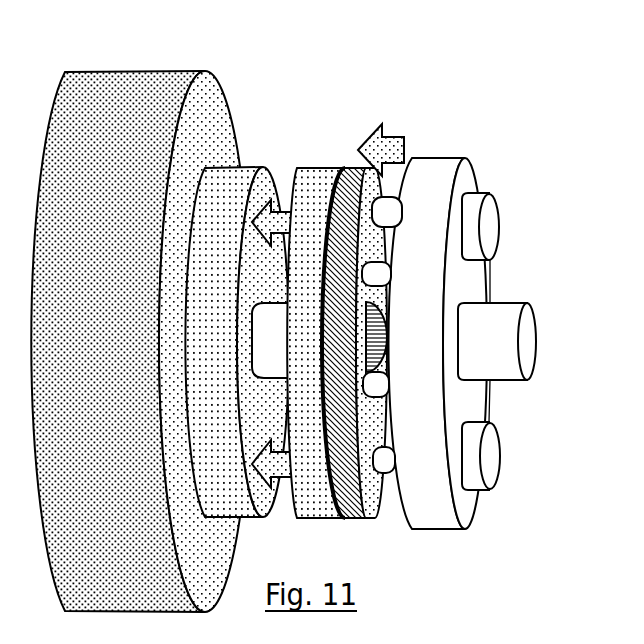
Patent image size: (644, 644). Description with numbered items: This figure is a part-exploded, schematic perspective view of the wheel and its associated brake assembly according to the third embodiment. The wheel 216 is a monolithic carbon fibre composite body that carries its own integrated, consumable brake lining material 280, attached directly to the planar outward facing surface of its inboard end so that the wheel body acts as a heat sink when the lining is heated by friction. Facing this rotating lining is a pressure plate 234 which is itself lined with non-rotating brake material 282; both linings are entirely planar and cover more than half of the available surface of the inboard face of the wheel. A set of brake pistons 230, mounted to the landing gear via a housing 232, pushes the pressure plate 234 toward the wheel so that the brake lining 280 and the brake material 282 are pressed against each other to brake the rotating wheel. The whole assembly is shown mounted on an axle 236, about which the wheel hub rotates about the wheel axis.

The wheel 216 is at (155, 86).
The brake lining material 280 is at (233, 178).
The brake material 282 is at (318, 183).
The pressure plate 234 is at (357, 503).
The brake pistons 230 is at (375, 272).
The housing 232 is at (437, 165).
The axle 236 is at (507, 343).